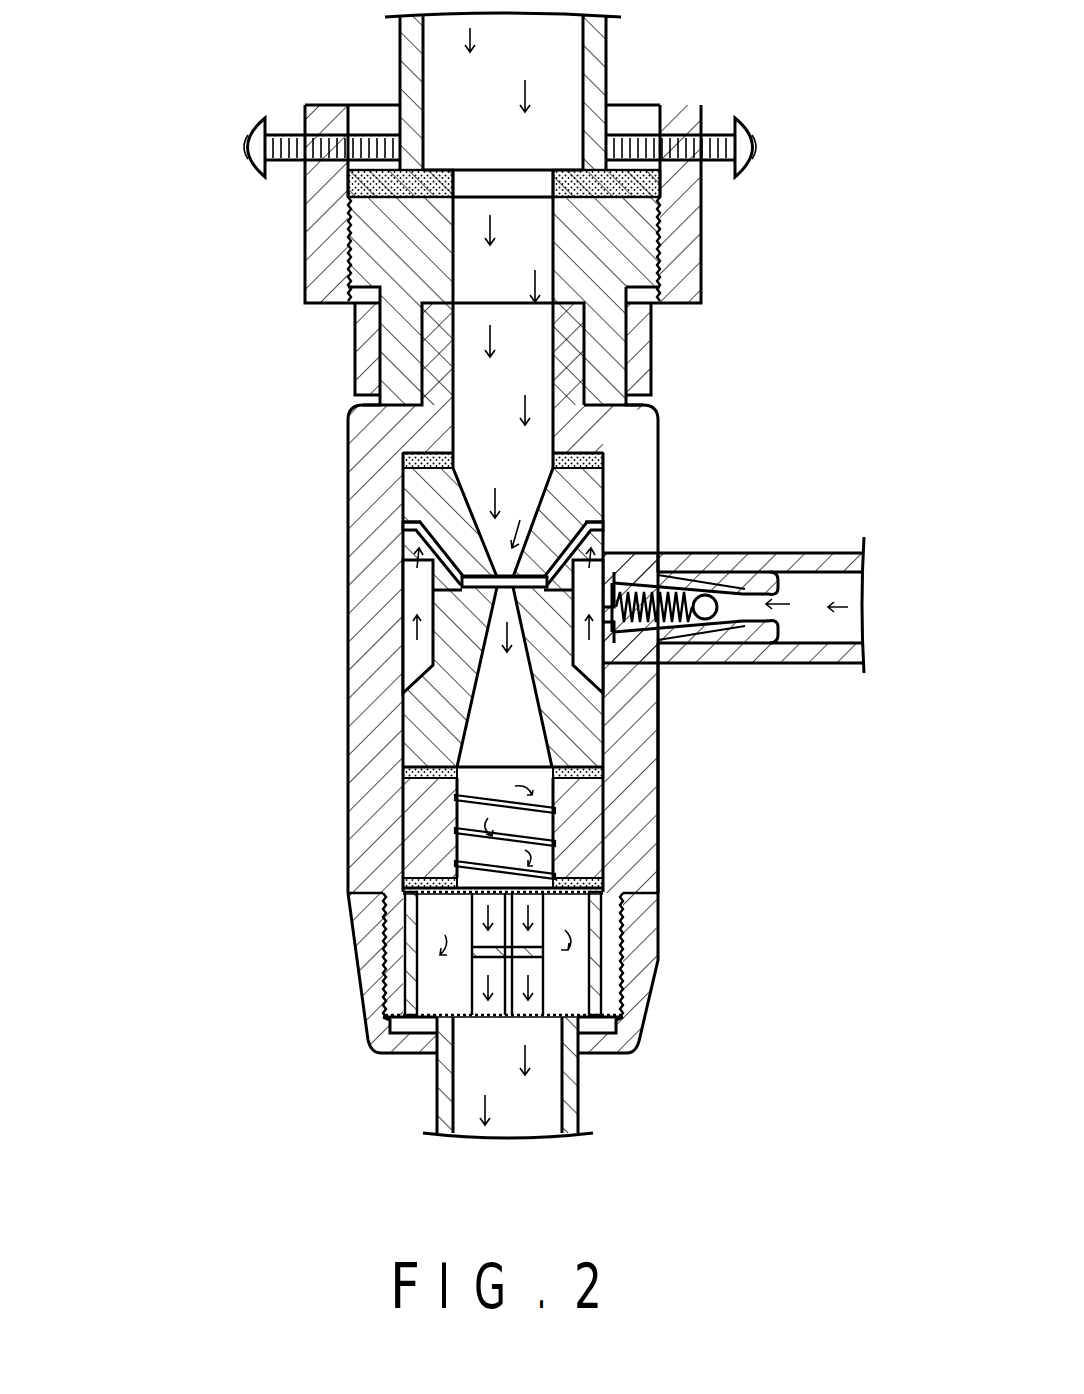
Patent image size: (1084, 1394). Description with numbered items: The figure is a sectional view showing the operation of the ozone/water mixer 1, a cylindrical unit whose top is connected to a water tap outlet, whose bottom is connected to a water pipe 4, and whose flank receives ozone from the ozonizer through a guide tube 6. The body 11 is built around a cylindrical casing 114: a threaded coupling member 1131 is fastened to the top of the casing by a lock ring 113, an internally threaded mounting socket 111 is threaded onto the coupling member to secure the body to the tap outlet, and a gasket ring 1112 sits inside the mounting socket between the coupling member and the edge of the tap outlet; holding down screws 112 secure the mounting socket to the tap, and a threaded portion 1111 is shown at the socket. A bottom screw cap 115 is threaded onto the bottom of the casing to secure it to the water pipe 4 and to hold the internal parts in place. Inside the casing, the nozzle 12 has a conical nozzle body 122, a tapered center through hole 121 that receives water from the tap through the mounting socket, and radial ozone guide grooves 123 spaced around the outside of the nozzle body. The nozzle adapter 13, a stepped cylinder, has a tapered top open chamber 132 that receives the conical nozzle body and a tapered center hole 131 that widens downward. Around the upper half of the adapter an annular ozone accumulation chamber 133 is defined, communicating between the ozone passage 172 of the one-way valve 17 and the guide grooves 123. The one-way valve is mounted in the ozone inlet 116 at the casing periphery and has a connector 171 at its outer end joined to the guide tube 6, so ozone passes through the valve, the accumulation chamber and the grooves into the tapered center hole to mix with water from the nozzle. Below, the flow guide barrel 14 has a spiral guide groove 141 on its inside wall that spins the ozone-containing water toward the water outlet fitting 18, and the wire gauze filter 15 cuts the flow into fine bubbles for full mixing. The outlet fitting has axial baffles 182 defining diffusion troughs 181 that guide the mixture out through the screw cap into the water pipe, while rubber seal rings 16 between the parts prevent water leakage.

The ozone/water mixer 1 is at (508, 575).
The body 11 is at (352, 411).
The internally threaded mounting socket 111 is at (330, 238).
The threaded hole 1111 is at (673, 293).
The gasket ring 1112 is at (627, 137).
The holding down screws 112 is at (292, 132).
The threaded coupling member 1131 is at (627, 237).
The lock ring 113 is at (637, 348).
The cylindrical casing 114 is at (627, 833).
The bottom screw cap 115 is at (650, 960).
The ozone inlet 116 is at (630, 560).
The nozzle 12 is at (400, 483).
The tapered center through hole 121 is at (527, 492).
The conical nozzle body 122 is at (418, 520).
The radial ozone guide grooves 123 is at (418, 545).
The nozzle adapter 13 is at (388, 691).
The tapered center hole 131 is at (487, 738).
The tapered top open chamber 132 is at (420, 588).
The annular ozone accumulation chamber 133 is at (392, 650).
The flow guide barrel 14 is at (430, 800).
The spiral guide groove 141 is at (470, 855).
The wire gauze filter 15 is at (580, 898).
The rubber seal rings 16 is at (607, 460).
The one-way valve 17 is at (728, 565).
The connector 171 is at (747, 643).
The ozone passage 172 is at (658, 667).
The water outlet fitting 18 is at (425, 989).
The diffusion troughs 181 is at (429, 932).
The axial baffles 182 is at (429, 992).
The water pipe 4 is at (567, 1097).
The guide tube 6 is at (810, 647).